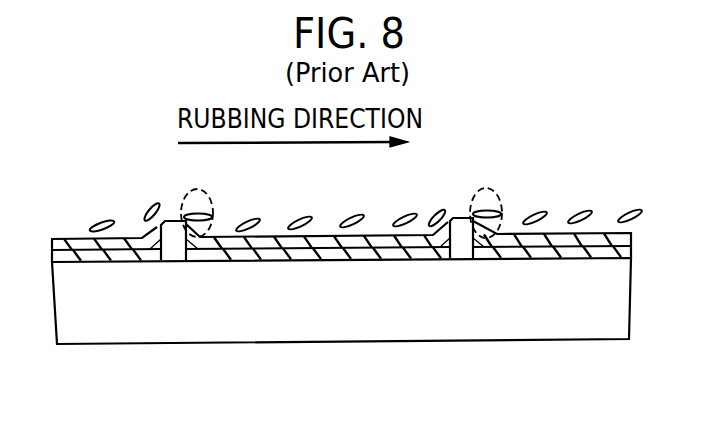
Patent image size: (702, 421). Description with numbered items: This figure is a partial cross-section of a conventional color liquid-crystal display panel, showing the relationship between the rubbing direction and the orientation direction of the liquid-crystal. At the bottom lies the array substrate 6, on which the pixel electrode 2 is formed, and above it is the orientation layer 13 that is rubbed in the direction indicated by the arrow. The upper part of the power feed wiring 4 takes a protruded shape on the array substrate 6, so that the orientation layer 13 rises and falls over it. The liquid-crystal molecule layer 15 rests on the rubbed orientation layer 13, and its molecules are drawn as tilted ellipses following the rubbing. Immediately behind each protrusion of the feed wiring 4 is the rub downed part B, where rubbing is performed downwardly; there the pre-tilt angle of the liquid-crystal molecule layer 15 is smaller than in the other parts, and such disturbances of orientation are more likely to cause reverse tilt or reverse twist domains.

The pixel electrode 2 is at (78, 258).
The power feed wiring 4 is at (147, 223).
The array substrate 6 is at (87, 323).
The orientation layer 13 is at (73, 242).
The liquid-crystal molecule layer 15 is at (153, 207).
The rub downed part B is at (211, 197).